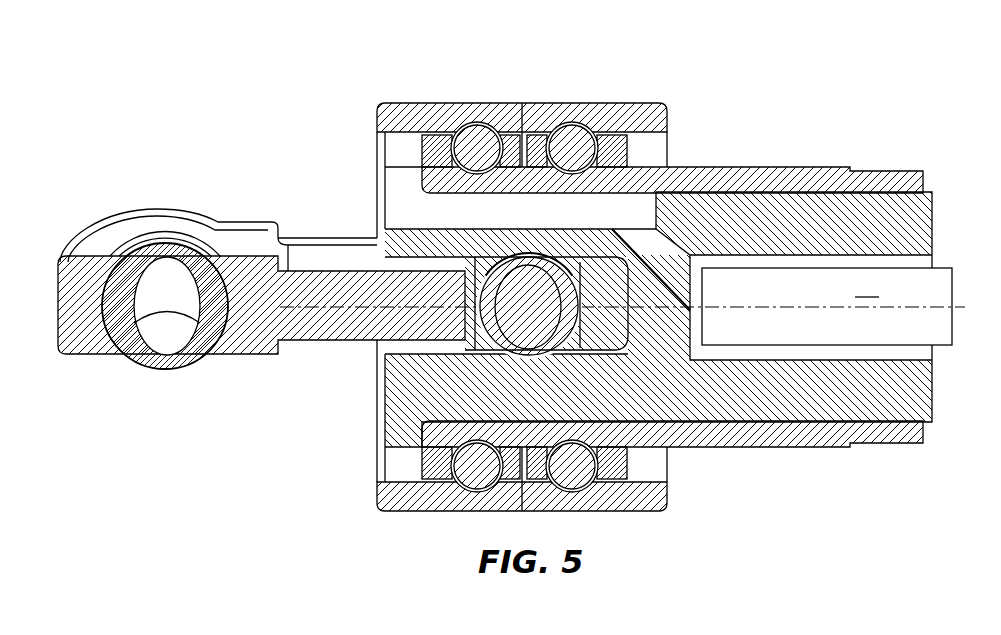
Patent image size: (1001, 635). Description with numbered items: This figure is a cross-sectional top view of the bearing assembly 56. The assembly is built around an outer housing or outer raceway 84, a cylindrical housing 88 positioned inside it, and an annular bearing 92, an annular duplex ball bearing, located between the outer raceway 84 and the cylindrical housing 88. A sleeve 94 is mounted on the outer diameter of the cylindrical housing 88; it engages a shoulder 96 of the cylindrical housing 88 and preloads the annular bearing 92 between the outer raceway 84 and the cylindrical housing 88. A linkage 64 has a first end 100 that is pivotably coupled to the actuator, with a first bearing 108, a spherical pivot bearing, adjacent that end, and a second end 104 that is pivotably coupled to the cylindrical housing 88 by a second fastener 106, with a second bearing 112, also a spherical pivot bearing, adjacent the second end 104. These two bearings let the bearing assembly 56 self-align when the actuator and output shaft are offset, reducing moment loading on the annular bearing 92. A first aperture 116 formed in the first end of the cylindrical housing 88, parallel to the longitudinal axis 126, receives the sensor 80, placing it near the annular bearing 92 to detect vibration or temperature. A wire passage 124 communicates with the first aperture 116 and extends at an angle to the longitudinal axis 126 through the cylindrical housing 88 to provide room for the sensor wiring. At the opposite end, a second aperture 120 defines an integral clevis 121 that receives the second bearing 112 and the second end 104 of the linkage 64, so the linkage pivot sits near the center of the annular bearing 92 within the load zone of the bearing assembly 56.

The bearing assembly 56 is at (662, 70).
The linkage 64 is at (248, 235).
The sensor 80 is at (827, 306).
The outer raceway 84 is at (440, 103).
The cylindrical housing 88 is at (897, 210).
The annular bearing 92 is at (608, 138).
The sleeve 94 is at (743, 178).
The shoulder 96 is at (442, 173).
The first end 100 is at (53, 273).
The second end 104 is at (640, 328).
The second fastener 106 is at (527, 328).
The first bearing 108 is at (187, 360).
The second bearing 112 is at (387, 342).
The first aperture 116 is at (808, 210).
The second aperture 120 is at (408, 353).
The integral clevis 121 is at (617, 342).
The wire passage 124 is at (648, 252).
The longitudinal axis 126 is at (904, 312).